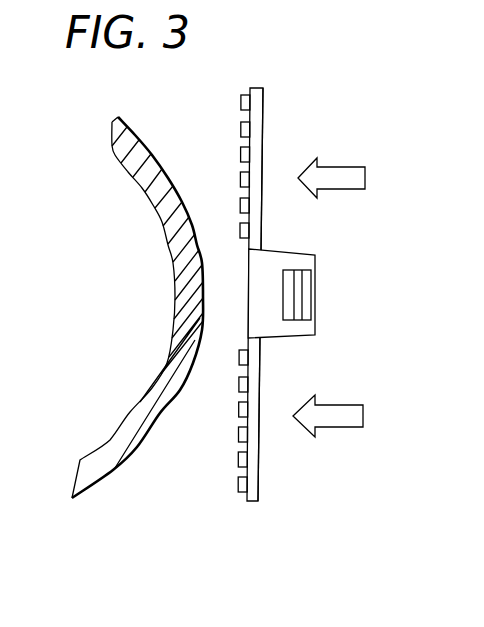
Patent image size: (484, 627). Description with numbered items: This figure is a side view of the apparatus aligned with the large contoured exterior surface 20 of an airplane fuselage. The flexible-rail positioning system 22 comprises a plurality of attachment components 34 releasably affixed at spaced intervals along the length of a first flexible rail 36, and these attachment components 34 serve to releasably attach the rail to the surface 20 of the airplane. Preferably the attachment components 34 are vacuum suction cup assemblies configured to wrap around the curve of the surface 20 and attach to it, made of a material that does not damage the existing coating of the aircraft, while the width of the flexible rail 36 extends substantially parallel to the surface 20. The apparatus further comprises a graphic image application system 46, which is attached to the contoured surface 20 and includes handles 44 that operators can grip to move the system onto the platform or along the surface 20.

The large contoured exterior surface 20 is at (110, 477).
The flexible-rail positioning system 22 is at (261, 492).
The attachment components 34 is at (241, 157).
The first flexible rail 36 is at (263, 122).
The handles 44 is at (302, 285).
The graphic image application system 46 is at (287, 330).